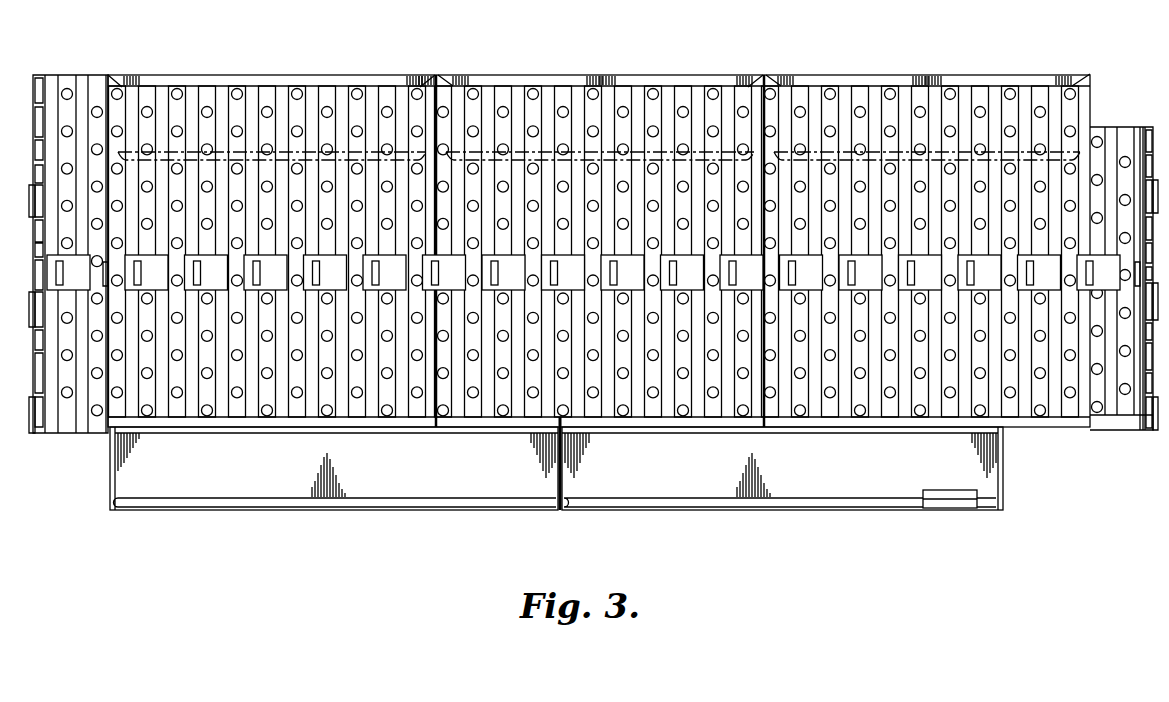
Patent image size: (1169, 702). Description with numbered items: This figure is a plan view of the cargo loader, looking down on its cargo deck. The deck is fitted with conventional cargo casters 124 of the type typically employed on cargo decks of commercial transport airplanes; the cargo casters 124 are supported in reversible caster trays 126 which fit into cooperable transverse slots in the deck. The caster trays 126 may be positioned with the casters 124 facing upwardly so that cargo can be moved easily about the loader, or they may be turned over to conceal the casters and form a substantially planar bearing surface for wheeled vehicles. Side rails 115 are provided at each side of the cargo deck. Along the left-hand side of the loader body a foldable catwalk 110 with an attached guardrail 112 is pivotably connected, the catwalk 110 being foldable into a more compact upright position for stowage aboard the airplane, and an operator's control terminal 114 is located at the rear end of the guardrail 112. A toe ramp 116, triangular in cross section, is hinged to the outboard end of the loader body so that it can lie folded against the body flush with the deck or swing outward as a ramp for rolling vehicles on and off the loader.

The foldable catwalk 110 is at (742, 472).
The guardrail 112 is at (328, 506).
The operator's control terminal 114 is at (950, 503).
The side rails 115 is at (964, 78).
The toe ramp 116 is at (53, 82).
The cargo casters 124 is at (235, 86).
The reversible caster trays 126 is at (387, 94).